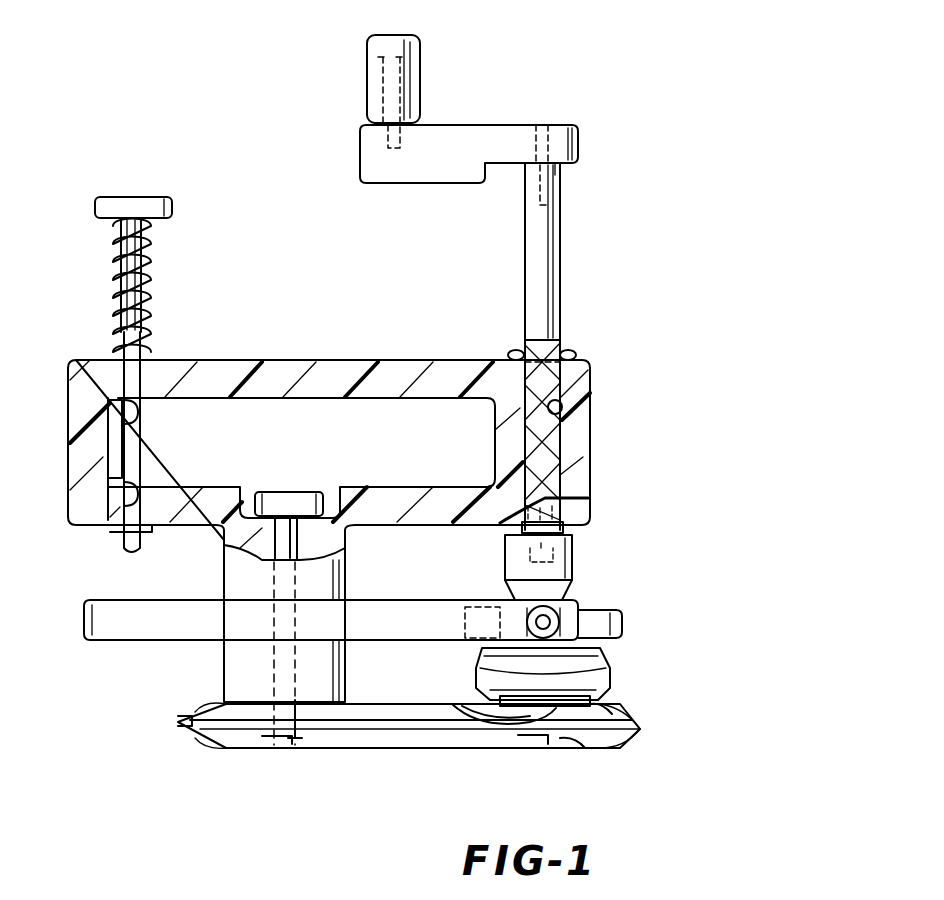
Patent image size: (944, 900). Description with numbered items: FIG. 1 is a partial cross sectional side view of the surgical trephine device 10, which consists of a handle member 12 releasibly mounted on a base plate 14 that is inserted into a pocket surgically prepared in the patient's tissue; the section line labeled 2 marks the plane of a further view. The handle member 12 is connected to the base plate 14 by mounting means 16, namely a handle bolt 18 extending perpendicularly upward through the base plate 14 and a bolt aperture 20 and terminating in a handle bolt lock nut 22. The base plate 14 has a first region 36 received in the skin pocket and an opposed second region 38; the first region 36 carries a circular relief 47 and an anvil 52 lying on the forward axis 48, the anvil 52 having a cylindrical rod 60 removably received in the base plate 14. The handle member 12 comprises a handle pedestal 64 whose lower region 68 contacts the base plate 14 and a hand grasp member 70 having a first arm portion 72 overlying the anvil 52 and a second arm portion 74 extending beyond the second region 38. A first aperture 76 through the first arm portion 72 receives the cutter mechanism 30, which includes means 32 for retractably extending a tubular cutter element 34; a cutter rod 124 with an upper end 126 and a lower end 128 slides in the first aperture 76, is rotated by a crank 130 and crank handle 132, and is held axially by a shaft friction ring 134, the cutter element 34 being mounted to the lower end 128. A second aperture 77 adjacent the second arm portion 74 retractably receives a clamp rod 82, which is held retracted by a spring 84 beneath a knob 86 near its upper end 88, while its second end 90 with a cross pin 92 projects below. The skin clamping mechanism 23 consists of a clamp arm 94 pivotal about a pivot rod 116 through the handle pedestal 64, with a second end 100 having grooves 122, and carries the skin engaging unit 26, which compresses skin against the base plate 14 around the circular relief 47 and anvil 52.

The surgical trephine device 10 is at (618, 236).
The handle member 12 is at (346, 409).
The base plate 14 is at (210, 742).
The mounting means 16 is at (273, 745).
The handle bolt 18 is at (300, 505).
The bolt aperture 20 is at (283, 702).
The handle bolt lock nut 22 is at (265, 490).
The skin clamping mechanism 23 is at (624, 626).
The skin engaging unit 26 is at (606, 665).
The cutter mechanism 30 is at (522, 287).
The means for retractably extending 32 is at (539, 346).
The tubular cutter element 34 is at (574, 560).
The first region 36 is at (640, 735).
The second region 38 is at (192, 722).
The circular relief 47 is at (592, 700).
The forward axis 48 is at (528, 750).
The anvil 52 is at (470, 712).
The cylindrical anvil rod 60 is at (573, 742).
The handle pedestal 64 is at (224, 655).
The lower region 68 is at (348, 660).
The hand grasp member 70 is at (398, 400).
The first arm portion 72 is at (592, 450).
The second arm portion 74 is at (68, 422).
The first aperture 76 is at (562, 407).
The second aperture 77 is at (140, 412).
The clamp rod 82 is at (150, 266).
The spring 84 is at (150, 305).
The knob 86 is at (172, 207).
The upper end 88 is at (135, 371).
The second end 90 is at (124, 550).
The cross pin 92 is at (150, 548).
The clamp arm 94 is at (84, 624).
The second end 100 is at (130, 630).
The pivot rod 116 is at (343, 625).
The groove 122 is at (130, 680).
The cutter rod 124 is at (525, 242).
The upper end 126 is at (578, 170).
The lower end 128 is at (565, 527).
The crank 130 is at (360, 160).
The crank handle 132 is at (420, 98).
The shaft friction ring 134 is at (576, 352).
The section line 2 is at (289, 564).